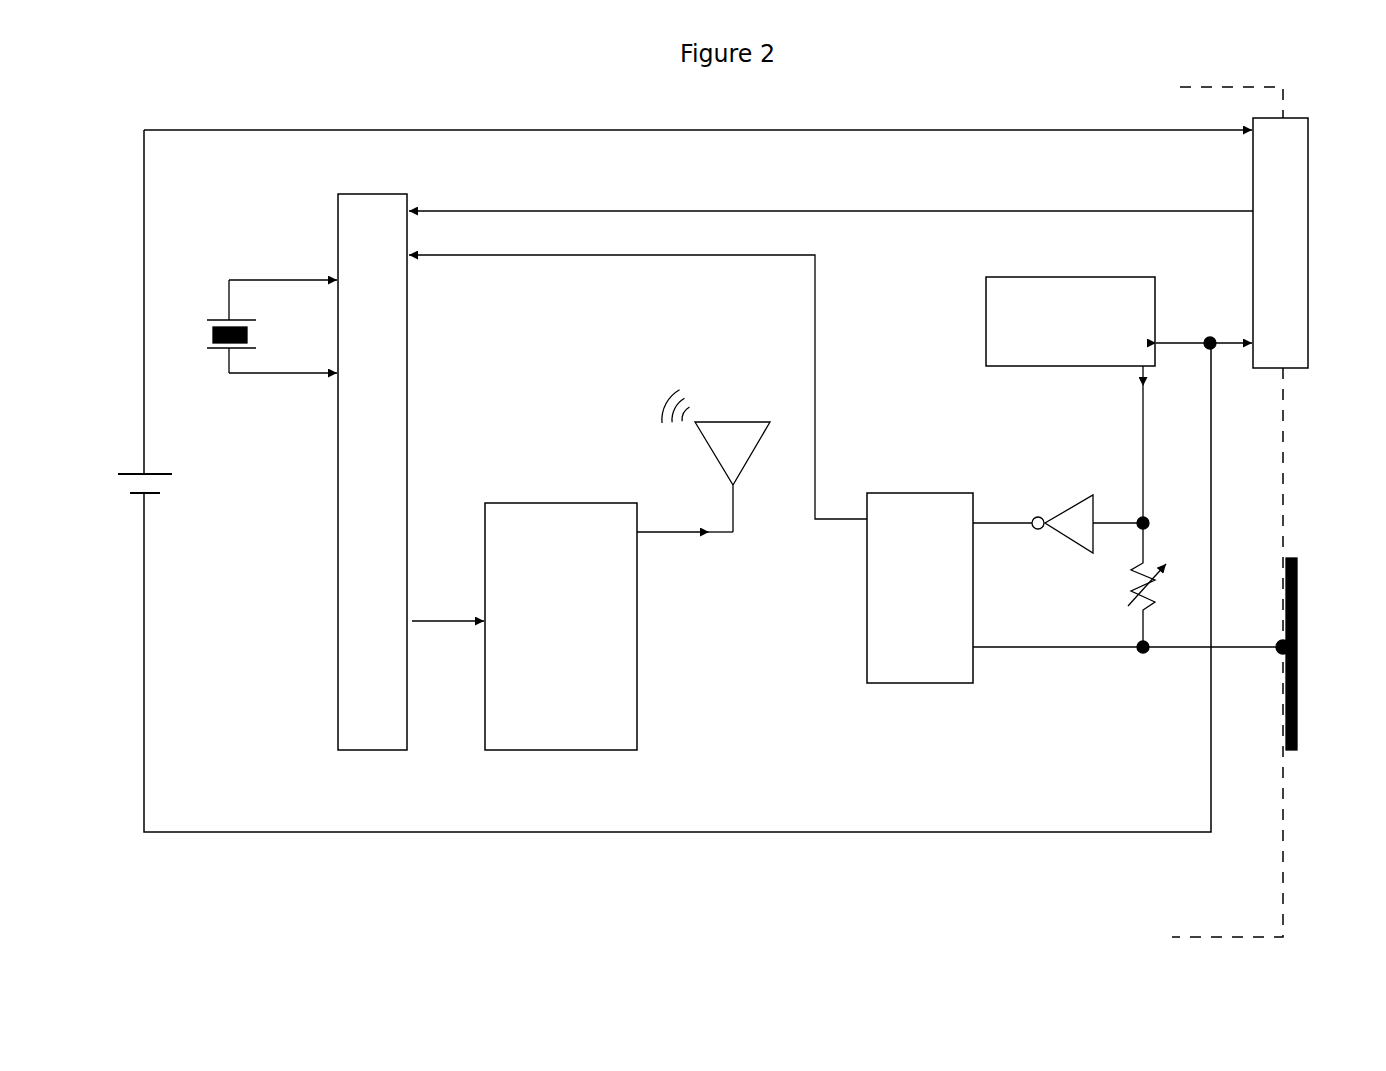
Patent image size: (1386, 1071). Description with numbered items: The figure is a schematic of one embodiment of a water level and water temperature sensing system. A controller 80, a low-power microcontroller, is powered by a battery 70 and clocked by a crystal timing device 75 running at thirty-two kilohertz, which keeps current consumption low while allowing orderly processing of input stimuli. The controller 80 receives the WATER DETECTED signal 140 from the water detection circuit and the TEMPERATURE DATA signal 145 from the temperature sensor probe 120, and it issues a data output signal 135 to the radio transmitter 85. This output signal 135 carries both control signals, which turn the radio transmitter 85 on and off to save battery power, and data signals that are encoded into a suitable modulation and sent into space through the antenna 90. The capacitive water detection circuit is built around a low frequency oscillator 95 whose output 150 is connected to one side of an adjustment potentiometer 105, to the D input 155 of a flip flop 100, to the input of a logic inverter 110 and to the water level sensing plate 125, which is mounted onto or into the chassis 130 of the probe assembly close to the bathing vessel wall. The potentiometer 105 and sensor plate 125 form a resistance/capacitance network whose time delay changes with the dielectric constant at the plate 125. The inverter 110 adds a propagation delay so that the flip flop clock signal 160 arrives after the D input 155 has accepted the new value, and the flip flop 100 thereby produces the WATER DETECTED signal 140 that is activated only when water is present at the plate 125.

The battery 70 is at (155, 455).
The crystal timing device 75 is at (223, 312).
The controller 80 is at (388, 191).
The radio transmitter 85 is at (485, 510).
The antenna 90 is at (722, 472).
The low frequency oscillator 95 is at (1012, 370).
The flip flop 100 is at (907, 684).
The adjustment potentiometer 105 is at (1153, 590).
The logic inverter 110 is at (1069, 550).
The temperature sensor probe 120 is at (1310, 132).
The water level sensing plate 125 is at (1290, 757).
The chassis 130 is at (1247, 933).
The data output signal 135 is at (417, 625).
The WATER DETECTED signal 140 is at (468, 257).
The TEMPERATURE DATA signal 145 is at (483, 207).
The low frequency oscillator output 150 is at (1147, 385).
The D input 155 is at (1018, 650).
The flip flop clock signal 160 is at (1020, 515).